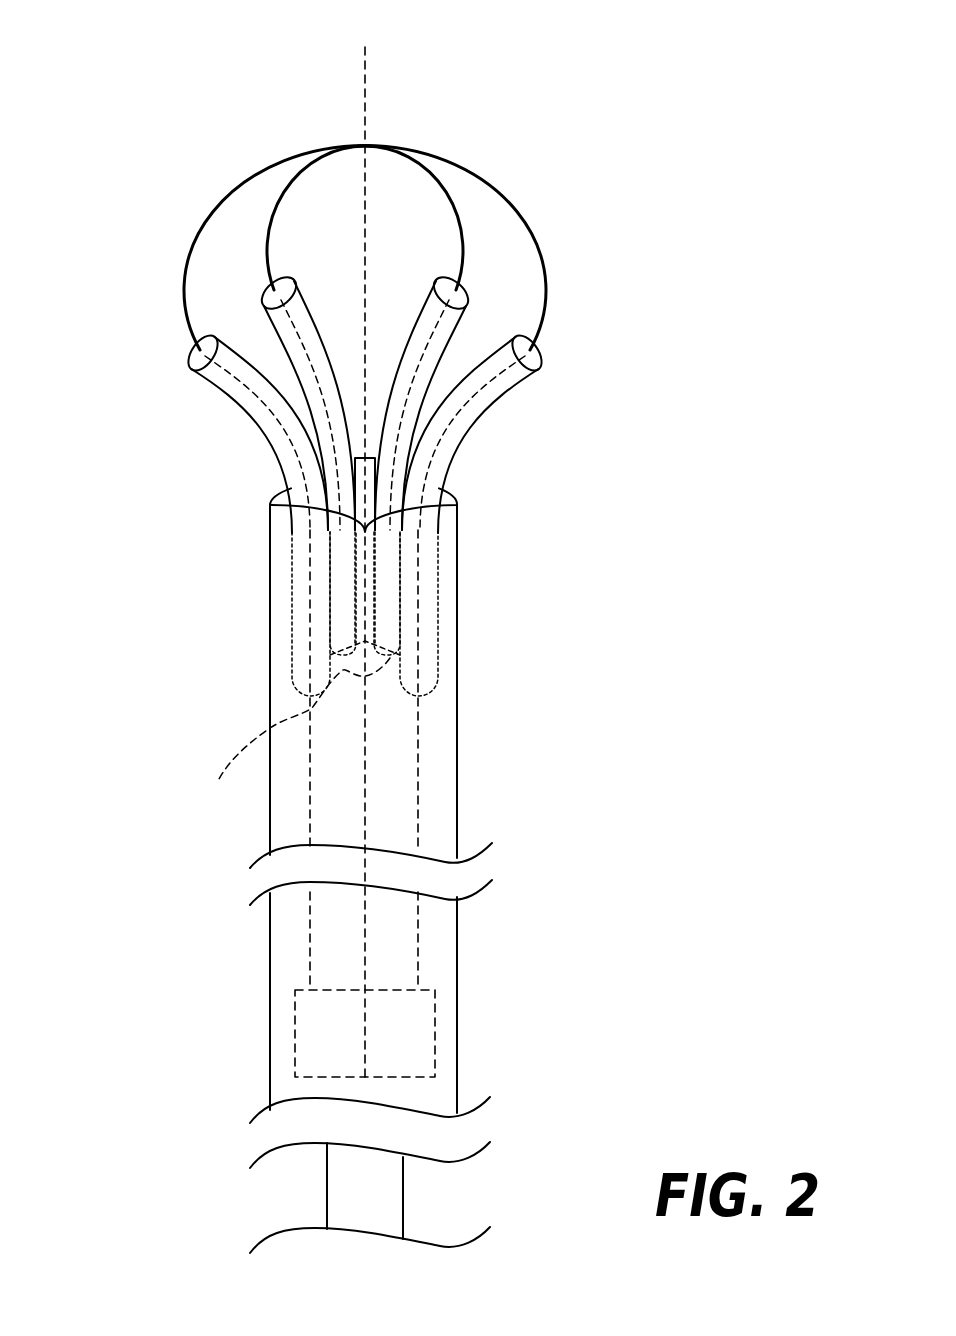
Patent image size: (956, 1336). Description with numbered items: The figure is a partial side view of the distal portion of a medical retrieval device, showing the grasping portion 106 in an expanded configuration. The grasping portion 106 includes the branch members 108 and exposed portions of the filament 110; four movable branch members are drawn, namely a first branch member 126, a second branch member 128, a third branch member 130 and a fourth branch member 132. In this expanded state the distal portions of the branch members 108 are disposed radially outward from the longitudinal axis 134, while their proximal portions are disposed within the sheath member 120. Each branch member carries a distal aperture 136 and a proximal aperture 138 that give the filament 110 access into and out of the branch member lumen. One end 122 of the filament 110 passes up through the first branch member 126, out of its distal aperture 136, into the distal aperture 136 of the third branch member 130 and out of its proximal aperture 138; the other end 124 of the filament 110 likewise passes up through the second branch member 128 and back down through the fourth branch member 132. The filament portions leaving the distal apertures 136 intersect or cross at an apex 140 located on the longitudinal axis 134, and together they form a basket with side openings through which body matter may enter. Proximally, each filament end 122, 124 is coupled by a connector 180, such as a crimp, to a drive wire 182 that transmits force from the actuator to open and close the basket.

The grasping portion 106 is at (598, 368).
The branch members 108 is at (472, 451).
The filament 110 is at (493, 176).
The sheath member 120 is at (457, 680).
The one end of the filament 122 is at (266, 222).
The other end of the filament 124 is at (432, 182).
The first branch member 126 is at (266, 314).
The second branch member 128 is at (452, 320).
The third branch member 130 is at (226, 392).
The fourth branch member 132 is at (523, 379).
The longitudinal axis 134 is at (368, 97).
The distal apertures 136 is at (464, 282).
The proximal apertures 138 is at (432, 690).
The apex 140 is at (365, 145).
The connector 180 is at (436, 1054).
The drive wire 182 is at (405, 1197).